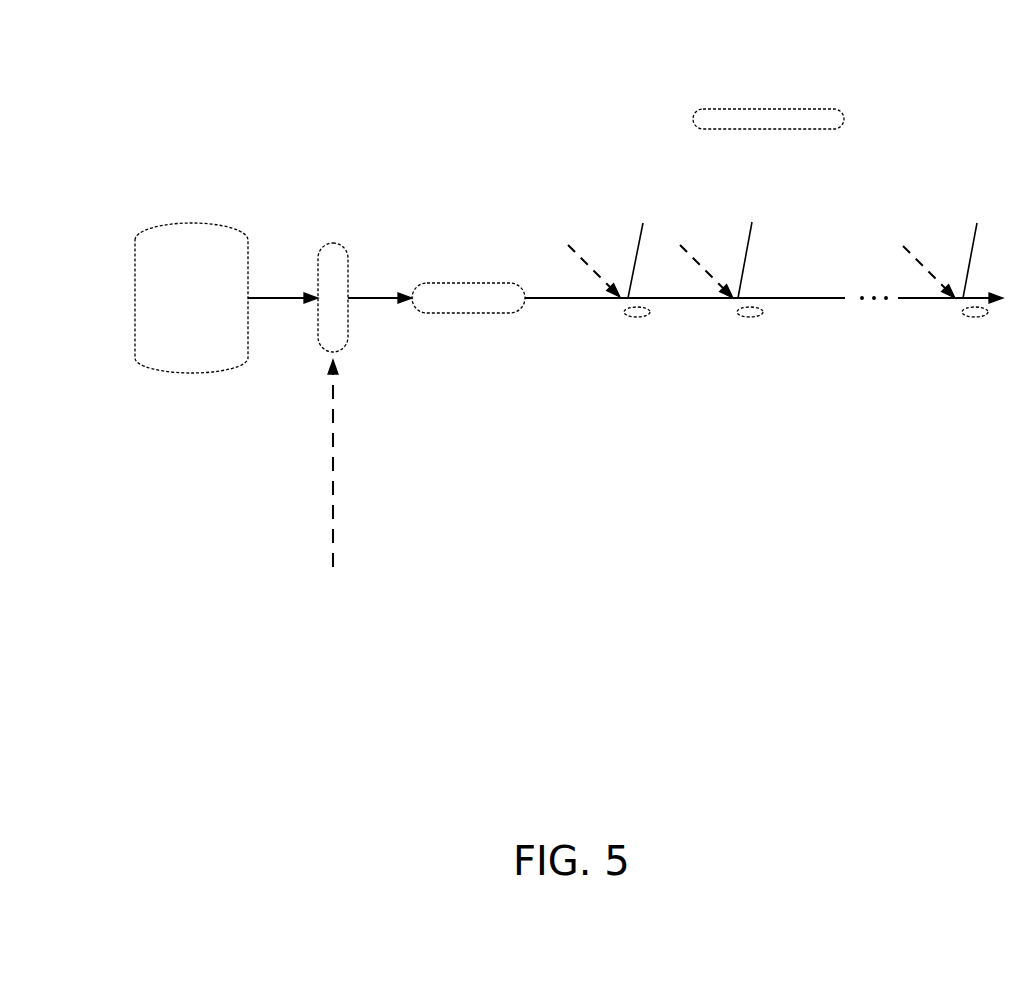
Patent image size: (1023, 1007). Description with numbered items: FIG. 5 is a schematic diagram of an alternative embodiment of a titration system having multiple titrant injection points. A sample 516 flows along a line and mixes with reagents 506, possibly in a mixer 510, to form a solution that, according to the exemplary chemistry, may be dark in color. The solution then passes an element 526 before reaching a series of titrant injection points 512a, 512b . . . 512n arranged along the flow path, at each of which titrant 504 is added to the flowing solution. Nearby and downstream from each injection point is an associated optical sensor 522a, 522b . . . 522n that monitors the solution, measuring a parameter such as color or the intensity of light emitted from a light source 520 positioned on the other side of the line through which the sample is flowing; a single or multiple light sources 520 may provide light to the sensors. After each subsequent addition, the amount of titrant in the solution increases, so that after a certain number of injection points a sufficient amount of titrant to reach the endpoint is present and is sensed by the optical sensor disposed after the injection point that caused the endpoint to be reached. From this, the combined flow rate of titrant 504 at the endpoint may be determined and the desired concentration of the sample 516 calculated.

The titrant 504 is at (574, 252).
The reagents 506 is at (333, 562).
The mixer 510 is at (333, 267).
The titrant injection point 512a is at (648, 246).
The titrant injection point 512b is at (761, 246).
The titrant injection point 512n is at (906, 245).
The sample 516 is at (177, 233).
The light source 520 is at (777, 122).
The optical sensor 522a is at (637, 316).
The optical sensor 522b is at (750, 316).
The optical sensor 522n is at (975, 316).
The filter / amplifier 526 is at (453, 292).